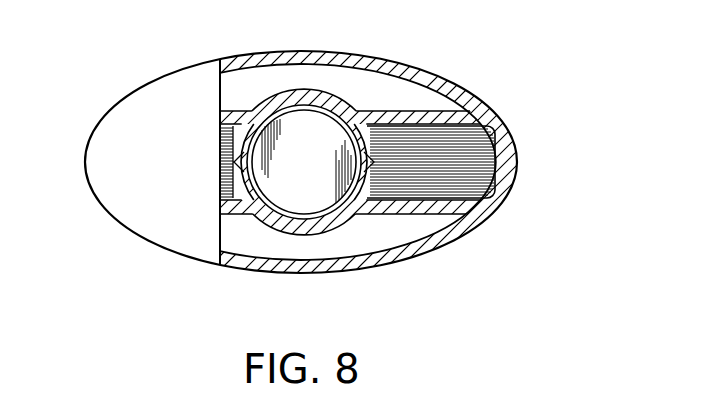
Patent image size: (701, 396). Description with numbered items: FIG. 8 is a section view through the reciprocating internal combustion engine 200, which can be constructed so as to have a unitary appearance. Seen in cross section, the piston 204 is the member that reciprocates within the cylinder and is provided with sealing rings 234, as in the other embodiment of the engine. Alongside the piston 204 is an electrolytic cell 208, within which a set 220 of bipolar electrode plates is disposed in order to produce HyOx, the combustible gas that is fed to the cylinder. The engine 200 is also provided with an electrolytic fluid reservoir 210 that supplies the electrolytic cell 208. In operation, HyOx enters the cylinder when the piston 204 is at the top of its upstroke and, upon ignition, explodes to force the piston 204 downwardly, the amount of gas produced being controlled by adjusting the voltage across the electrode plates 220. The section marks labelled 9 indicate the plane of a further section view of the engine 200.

The body assembly 200 is at (204, 272).
The bore opening 204 is at (305, 137).
The outer wall 208 is at (497, 152).
The support housing 210 is at (377, 233).
The core member 220 is at (480, 182).
The end wall 234 is at (223, 63).
The section line 9- 9 is at (300, 45).